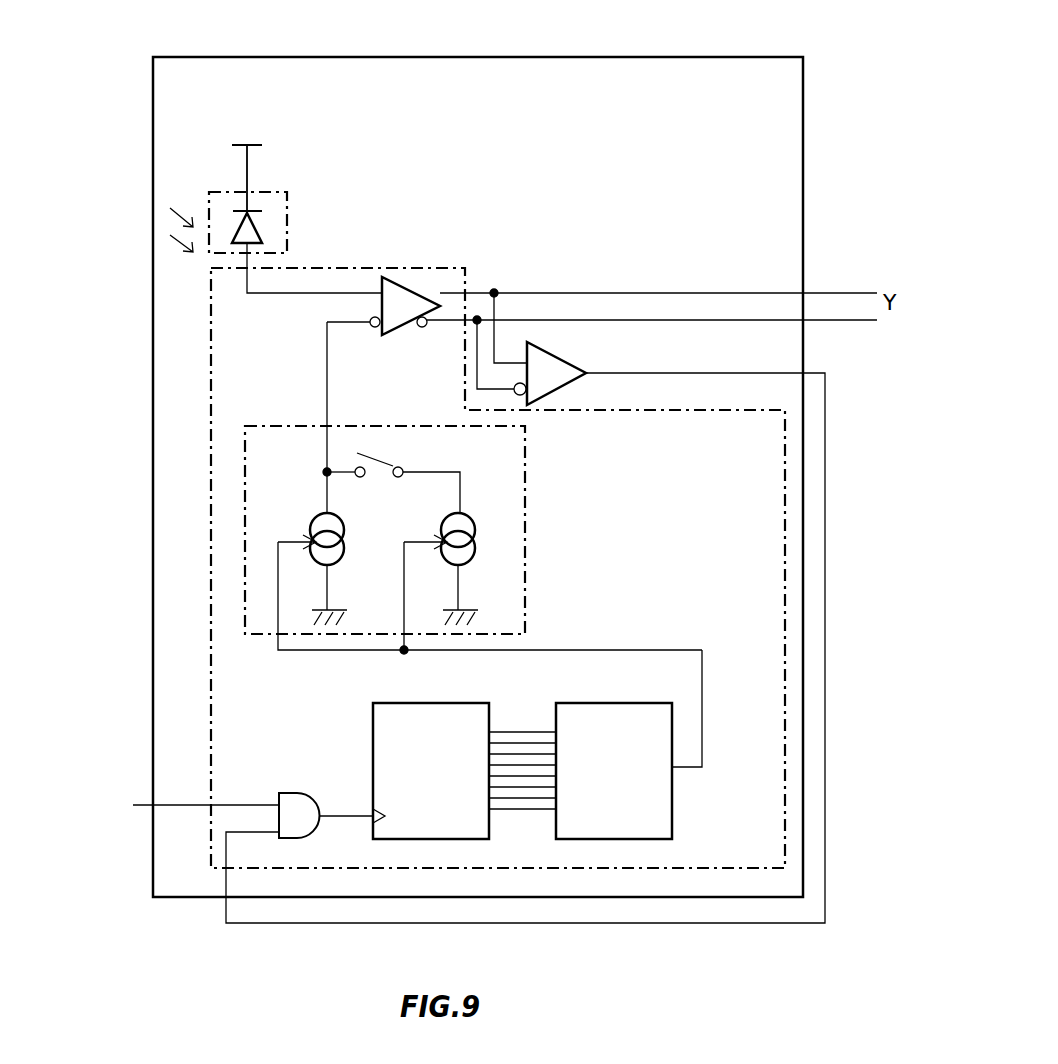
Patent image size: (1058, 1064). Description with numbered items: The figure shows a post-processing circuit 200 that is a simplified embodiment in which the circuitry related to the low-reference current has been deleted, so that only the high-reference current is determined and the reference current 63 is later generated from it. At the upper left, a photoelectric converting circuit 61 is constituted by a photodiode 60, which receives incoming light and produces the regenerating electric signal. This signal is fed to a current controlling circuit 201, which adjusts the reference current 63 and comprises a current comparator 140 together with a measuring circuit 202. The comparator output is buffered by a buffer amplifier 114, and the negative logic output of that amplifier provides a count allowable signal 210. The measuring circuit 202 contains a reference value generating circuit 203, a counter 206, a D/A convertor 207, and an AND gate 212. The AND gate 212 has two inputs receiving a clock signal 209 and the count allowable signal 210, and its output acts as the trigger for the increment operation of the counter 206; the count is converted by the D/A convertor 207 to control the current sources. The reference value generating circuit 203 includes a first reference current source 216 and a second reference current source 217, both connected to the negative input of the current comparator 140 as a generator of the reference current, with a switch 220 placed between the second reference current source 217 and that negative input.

The post-processing circuit 200 is at (705, 57).
The photoelectric converting circuit 61 is at (287, 192).
The photodiode 60 is at (258, 232).
The current controlling circuit 201 is at (355, 268).
The current comparator 140 is at (420, 329).
The buffer amplifier 114 is at (563, 358).
The reference current 63 is at (327, 392).
The switch 220 is at (378, 460).
The reference value generating circuit 203 is at (526, 464).
The first reference current source 216 is at (342, 541).
The second reference current source 217 is at (470, 541).
The measuring circuit 202 is at (785, 503).
The count allowable signal 210 is at (826, 486).
The counter 206 is at (440, 703).
The D/A convertor 207 is at (617, 703).
The clock signal 209 is at (173, 804).
The AND gate 212 is at (290, 792).